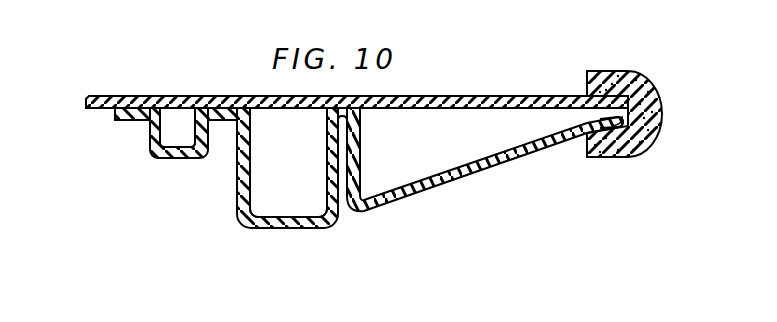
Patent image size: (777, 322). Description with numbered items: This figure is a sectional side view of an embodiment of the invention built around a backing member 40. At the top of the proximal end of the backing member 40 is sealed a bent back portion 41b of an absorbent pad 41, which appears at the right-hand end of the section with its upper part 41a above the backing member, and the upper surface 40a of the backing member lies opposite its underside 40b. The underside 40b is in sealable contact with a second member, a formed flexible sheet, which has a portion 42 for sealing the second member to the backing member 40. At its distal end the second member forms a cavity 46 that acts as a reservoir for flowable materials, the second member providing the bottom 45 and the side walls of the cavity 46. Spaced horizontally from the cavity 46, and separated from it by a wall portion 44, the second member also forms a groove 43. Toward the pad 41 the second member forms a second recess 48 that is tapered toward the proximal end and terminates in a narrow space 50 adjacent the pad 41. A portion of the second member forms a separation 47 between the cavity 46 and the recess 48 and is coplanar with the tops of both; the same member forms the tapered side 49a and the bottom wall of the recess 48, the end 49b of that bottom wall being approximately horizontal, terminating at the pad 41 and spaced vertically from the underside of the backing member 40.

The backing member 40 is at (85, 101).
The upper surface of plate 40a is at (107, 95).
The underside of backing member 40b is at (100, 110).
The absorbent pad 41 is at (663, 117).
The upper block of end bead 41a is at (612, 70).
The bent back portion of absorbent pad 41b is at (613, 133).
The sealing portion of second member 42 is at (135, 120).
The groove 43 is at (175, 132).
The wall portion 44 is at (212, 150).
The bottom of cavity 45 is at (255, 228).
The cavity 46 is at (287, 188).
The separation 47 is at (227, 107).
The second recess 48 is at (470, 135).
The tapered side of recess 49a is at (414, 197).
The end of bottom wall 49b is at (599, 153).
The narrow space 50 is at (625, 125).